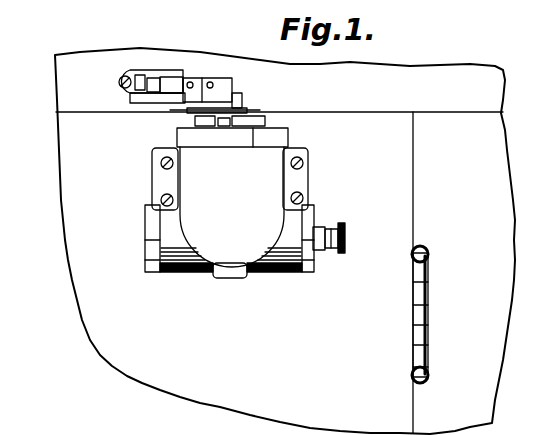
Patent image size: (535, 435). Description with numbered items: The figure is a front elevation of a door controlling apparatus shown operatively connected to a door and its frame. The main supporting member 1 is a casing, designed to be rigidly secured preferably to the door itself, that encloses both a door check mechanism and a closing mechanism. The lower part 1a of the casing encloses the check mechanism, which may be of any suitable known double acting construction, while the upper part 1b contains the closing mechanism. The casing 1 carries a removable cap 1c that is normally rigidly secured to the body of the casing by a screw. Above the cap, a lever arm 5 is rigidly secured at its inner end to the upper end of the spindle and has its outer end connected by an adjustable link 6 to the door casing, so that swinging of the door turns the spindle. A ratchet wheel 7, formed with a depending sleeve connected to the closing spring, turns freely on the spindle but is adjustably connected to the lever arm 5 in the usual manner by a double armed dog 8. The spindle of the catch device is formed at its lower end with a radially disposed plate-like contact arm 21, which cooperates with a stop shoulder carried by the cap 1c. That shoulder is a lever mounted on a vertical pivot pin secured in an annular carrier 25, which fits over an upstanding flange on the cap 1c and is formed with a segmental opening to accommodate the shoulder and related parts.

The main supporting member 1 is at (289, 141).
The lower part of the casing 1a is at (287, 267).
The upper part of the casing 1b is at (268, 188).
The removable cap 1c is at (270, 133).
The lever arm 5 is at (165, 100).
The adjustable link 6 is at (116, 86).
The ratchet wheel 7 is at (250, 110).
The double armed dog 8 is at (226, 122).
The contact arm 21 is at (215, 122).
The annular carrier 25 is at (255, 122).